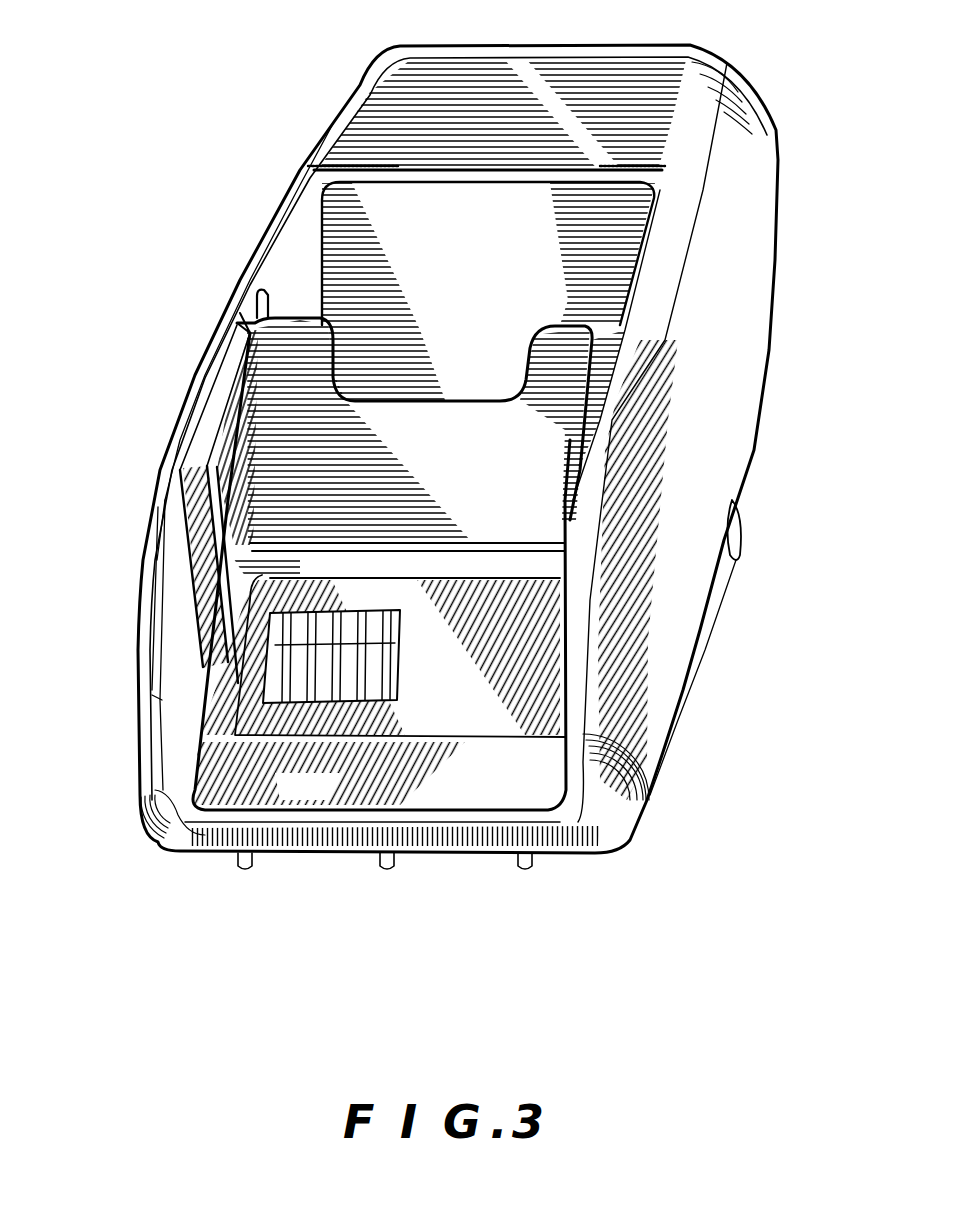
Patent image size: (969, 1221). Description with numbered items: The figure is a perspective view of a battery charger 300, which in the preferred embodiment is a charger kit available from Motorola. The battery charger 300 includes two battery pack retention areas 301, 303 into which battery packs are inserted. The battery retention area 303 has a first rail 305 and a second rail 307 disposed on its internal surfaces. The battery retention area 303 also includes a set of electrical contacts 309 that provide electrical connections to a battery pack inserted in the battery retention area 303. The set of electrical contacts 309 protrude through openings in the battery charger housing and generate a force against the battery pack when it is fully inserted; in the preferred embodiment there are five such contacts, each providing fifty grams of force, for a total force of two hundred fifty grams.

The battery charger 300 is at (792, 733).
The battery pack retention area 301 is at (400, 262).
The battery pack retention area 303 is at (263, 297).
The first rail 305 is at (203, 470).
The second rail 307 is at (640, 293).
The set of electrical contacts 309 is at (334, 672).